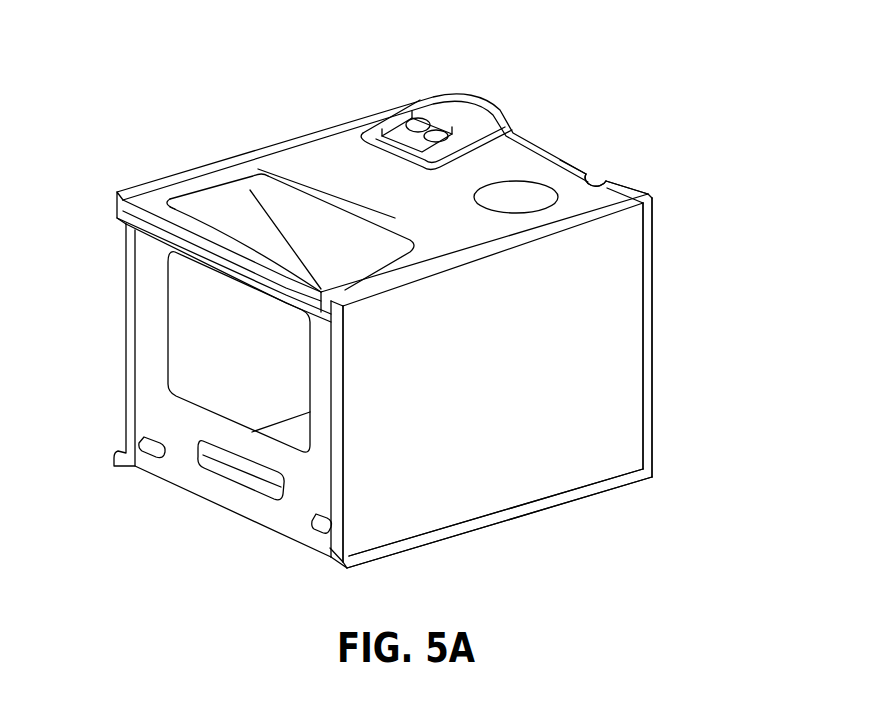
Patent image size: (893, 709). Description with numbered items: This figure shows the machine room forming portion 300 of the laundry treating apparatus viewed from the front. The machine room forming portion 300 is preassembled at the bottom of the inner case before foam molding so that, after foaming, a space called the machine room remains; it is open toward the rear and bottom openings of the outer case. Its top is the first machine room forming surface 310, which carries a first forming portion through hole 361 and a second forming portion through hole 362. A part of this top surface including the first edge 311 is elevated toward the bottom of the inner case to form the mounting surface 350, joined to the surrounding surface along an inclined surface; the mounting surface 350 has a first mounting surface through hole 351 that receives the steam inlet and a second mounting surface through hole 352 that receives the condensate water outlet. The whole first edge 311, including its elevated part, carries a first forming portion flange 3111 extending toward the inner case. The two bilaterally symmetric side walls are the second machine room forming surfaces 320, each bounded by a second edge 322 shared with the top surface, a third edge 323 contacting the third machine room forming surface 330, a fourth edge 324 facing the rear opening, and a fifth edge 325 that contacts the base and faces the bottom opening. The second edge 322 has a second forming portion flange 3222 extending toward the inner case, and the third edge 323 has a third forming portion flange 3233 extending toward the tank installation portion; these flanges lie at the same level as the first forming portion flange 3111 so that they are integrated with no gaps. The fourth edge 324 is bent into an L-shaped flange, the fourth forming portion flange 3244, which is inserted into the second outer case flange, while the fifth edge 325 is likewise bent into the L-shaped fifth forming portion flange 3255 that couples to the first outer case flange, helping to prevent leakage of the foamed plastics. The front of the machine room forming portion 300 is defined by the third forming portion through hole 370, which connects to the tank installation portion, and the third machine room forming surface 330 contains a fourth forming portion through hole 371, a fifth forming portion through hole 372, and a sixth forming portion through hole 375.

The machine room forming portion 300 is at (192, 42).
The first machine room forming surface 310 is at (320, 163).
The first edge 311 is at (600, 178).
The first forming portion flange 3111 is at (591, 172).
The second machine room forming surfaces 320 is at (491, 447).
The second edge 322 is at (252, 190).
The second forming portion flange 3222 is at (165, 202).
The third edge 323 is at (343, 463).
The third forming portion flange 3233 is at (333, 418).
The fourth edge 324 is at (652, 351).
The fourth forming portion flange 3244 is at (652, 393).
The fifth edge 325 is at (364, 556).
The fifth forming portion flange 3255 is at (603, 486).
The third machine room forming surface 330 is at (152, 305).
The mounting surface 350 is at (464, 117).
The first mounting surface through hole 351 is at (422, 122).
The second mounting surface through hole 352 is at (418, 112).
The first forming portion through hole 361 is at (533, 200).
The second forming portion through hole 362 is at (248, 172).
The third forming portion through hole 370 is at (195, 356).
The fourth forming portion through hole 371 is at (152, 447).
The fifth forming portion through hole 372 is at (327, 533).
The sixth forming portion through hole 375 is at (230, 463).